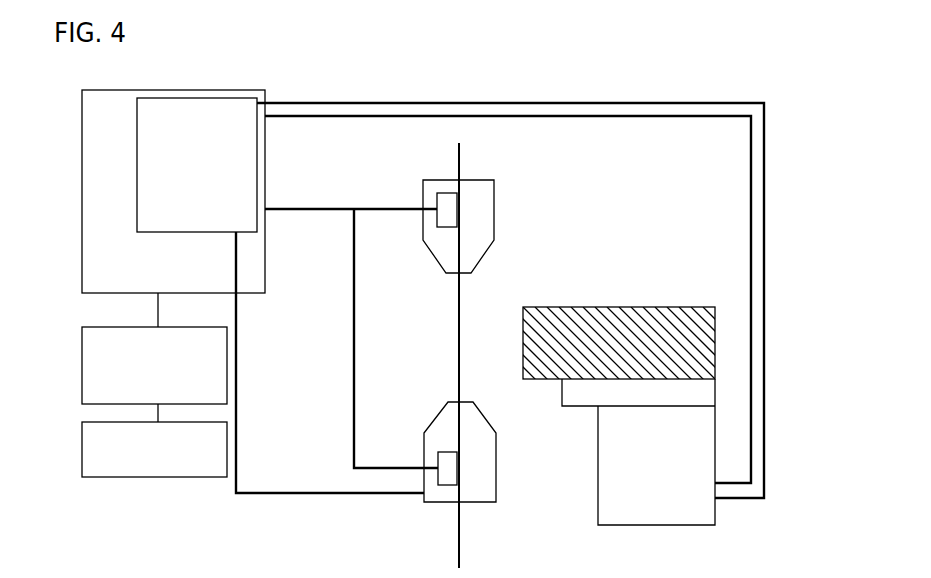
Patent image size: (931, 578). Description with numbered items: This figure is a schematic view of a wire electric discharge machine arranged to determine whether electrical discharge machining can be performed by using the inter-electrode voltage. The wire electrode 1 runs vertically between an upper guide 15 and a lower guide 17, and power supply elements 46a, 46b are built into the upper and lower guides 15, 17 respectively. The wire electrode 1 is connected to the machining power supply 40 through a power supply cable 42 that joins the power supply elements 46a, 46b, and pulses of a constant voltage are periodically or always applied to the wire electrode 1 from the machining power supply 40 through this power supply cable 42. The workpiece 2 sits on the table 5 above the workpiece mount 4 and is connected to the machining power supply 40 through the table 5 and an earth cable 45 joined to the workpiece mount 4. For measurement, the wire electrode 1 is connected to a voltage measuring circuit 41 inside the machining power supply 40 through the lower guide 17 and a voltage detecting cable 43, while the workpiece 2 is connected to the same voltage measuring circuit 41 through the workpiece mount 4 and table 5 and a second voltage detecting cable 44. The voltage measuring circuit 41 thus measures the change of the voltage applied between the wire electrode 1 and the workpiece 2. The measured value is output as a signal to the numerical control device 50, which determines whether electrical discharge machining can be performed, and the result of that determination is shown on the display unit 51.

The wire electrode 1 is at (459, 333).
The workpiece 2 is at (615, 307).
The workpiece mount 4 is at (628, 525).
The table 5 is at (562, 406).
The upper guide 15 is at (494, 183).
The lower guide 17 is at (487, 503).
The machining power supply 40 is at (153, 90).
The voltage measuring circuit 41 is at (205, 98).
The power supply cable 42 is at (338, 209).
The voltage detecting cable 43 is at (320, 493).
The voltage detecting cable 44 is at (737, 498).
The earth cable 45 is at (751, 165).
The power supply element 46a is at (448, 193).
The power supply element 46b is at (443, 483).
The numerical control device 50 is at (118, 327).
The display unit 51 is at (105, 477).